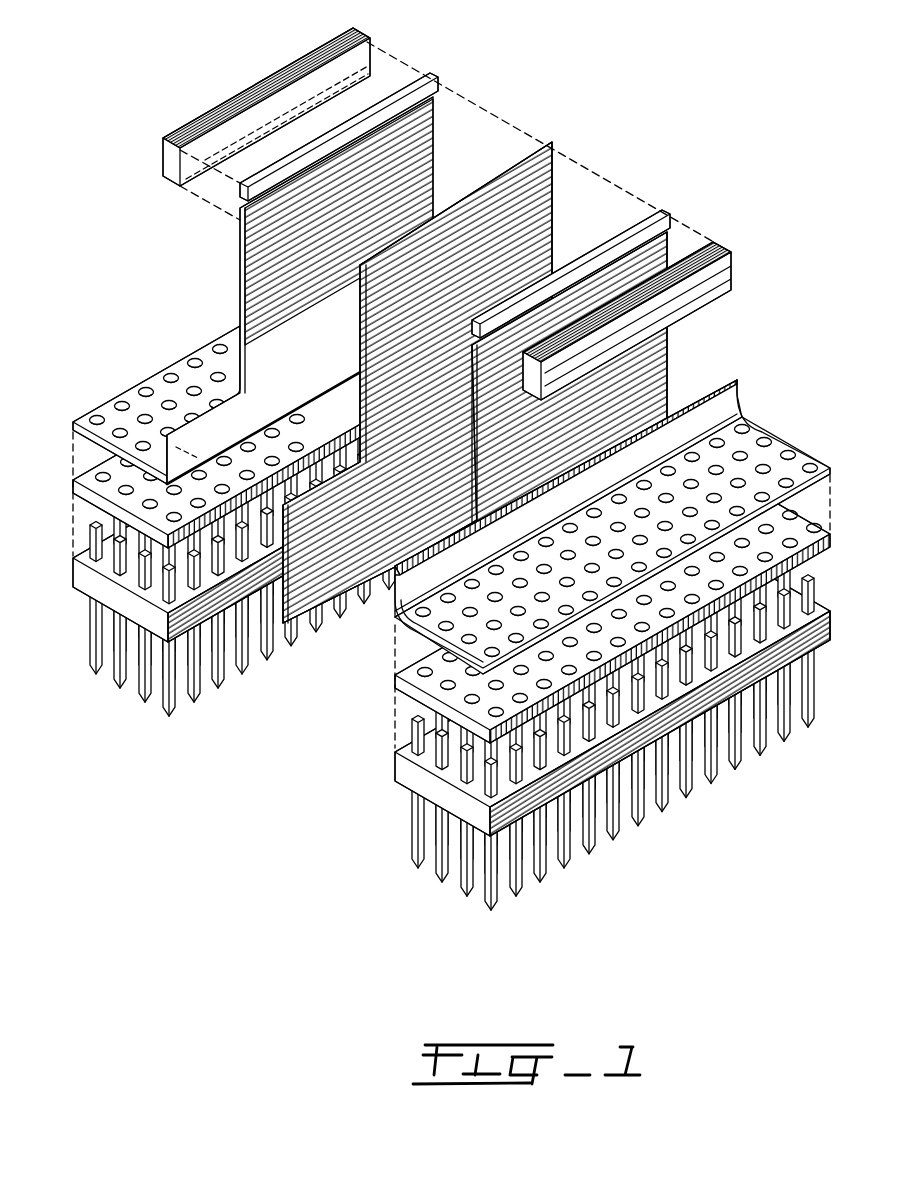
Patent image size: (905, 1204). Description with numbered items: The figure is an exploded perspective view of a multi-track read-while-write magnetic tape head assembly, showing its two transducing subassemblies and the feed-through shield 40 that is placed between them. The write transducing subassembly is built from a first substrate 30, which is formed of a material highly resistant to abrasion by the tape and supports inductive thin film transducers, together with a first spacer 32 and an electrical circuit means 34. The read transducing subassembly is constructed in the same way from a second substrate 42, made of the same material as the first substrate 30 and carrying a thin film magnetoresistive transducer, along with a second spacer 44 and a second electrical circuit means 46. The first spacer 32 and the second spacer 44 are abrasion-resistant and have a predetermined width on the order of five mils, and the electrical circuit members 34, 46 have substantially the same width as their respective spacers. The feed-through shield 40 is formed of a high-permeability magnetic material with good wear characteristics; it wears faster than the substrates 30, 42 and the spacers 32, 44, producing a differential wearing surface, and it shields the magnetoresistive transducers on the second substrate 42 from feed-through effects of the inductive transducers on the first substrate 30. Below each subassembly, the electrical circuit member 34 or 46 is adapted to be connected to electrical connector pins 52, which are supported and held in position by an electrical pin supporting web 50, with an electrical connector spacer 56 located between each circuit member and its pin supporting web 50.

The first substrate 30 is at (370, 47).
The first spacer 32 is at (434, 82).
The electrical circuit means 34 is at (431, 160).
The feed-through shield 40 is at (545, 222).
The second substrate 42 is at (721, 262).
The second spacer 44 is at (660, 220).
The second electrical circuit means 46 is at (733, 403).
The electrical pin supporting web 50 is at (82, 588).
The electrical connector pins 52 is at (165, 708).
The electrical connector spacer 56 is at (73, 492).